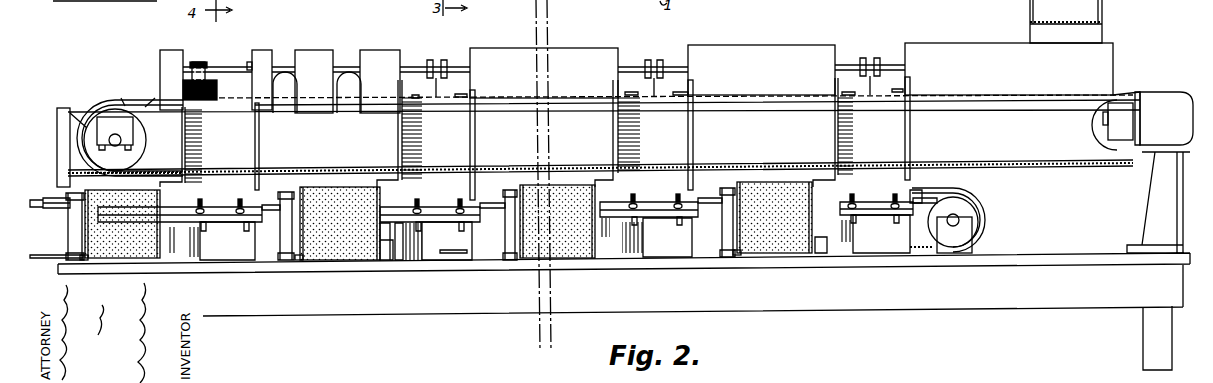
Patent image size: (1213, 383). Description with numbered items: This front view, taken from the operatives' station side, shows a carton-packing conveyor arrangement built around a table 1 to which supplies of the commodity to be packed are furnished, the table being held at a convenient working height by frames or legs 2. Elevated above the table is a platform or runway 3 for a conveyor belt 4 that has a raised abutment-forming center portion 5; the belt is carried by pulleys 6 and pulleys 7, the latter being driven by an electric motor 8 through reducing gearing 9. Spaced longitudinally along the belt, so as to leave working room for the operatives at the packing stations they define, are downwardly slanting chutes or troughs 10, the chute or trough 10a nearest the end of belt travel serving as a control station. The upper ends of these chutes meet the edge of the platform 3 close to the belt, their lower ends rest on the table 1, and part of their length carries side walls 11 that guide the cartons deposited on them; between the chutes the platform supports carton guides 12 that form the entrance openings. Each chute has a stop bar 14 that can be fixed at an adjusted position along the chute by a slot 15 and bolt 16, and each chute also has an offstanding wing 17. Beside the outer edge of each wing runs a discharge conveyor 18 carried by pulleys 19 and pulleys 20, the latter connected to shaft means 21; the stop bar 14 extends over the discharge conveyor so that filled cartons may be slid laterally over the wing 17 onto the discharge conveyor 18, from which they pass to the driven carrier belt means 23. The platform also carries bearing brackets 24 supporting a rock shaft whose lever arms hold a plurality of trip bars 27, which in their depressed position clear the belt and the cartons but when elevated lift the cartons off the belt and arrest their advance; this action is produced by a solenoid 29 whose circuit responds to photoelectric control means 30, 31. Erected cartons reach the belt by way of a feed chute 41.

The table 1 is at (712, 258).
The frames or legs 2 is at (1143, 335).
The platform or runway 3 is at (82, 111).
The conveyor belt 4 is at (147, 96).
The raised abutment-forming center portion 5 is at (122, 95).
The pulleys 6 is at (148, 139).
The pulleys 7 is at (1095, 138).
The electric motor 8 is at (1165, 95).
The reducing gearing 9 is at (1108, 118).
The chutes or troughs 10 is at (917, 142).
The chute or trough 10a is at (259, 158).
The side walls 11 is at (905, 127).
The carton guides 12 is at (975, 38).
The stop bar 14 is at (872, 235).
The slot 15 is at (880, 172).
The bolt 16 is at (882, 188).
The offstanding wing 17 is at (822, 178).
The discharge conveyor 18 is at (782, 280).
The pulleys 19 is at (743, 278).
The pulleys 20 is at (712, 225).
The shaft means 21 is at (712, 185).
The carrier belt means 23 is at (940, 187).
The bearing brackets 24 is at (878, 50).
The trip bars 27 is at (862, 92).
The solenoid 29 is at (205, 100).
The photoelectric control means 30 is at (337, 93).
The photoelectric control means 31 is at (248, 63).
The feed chute 41 is at (1080, 12).